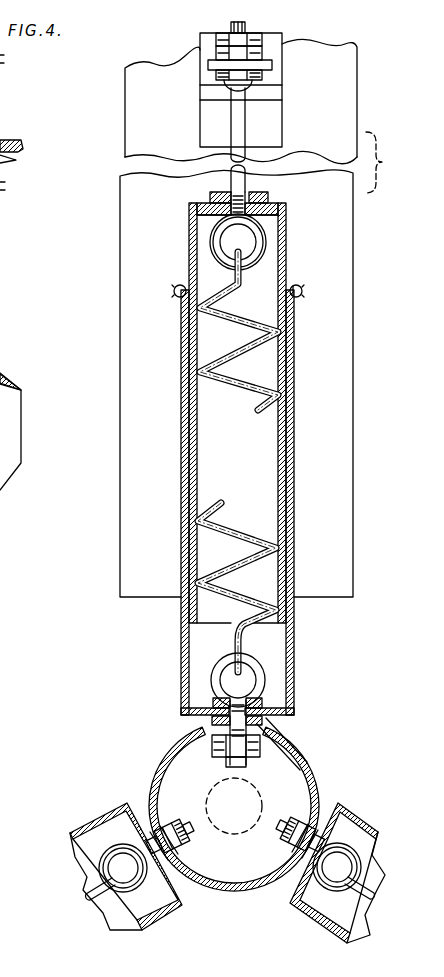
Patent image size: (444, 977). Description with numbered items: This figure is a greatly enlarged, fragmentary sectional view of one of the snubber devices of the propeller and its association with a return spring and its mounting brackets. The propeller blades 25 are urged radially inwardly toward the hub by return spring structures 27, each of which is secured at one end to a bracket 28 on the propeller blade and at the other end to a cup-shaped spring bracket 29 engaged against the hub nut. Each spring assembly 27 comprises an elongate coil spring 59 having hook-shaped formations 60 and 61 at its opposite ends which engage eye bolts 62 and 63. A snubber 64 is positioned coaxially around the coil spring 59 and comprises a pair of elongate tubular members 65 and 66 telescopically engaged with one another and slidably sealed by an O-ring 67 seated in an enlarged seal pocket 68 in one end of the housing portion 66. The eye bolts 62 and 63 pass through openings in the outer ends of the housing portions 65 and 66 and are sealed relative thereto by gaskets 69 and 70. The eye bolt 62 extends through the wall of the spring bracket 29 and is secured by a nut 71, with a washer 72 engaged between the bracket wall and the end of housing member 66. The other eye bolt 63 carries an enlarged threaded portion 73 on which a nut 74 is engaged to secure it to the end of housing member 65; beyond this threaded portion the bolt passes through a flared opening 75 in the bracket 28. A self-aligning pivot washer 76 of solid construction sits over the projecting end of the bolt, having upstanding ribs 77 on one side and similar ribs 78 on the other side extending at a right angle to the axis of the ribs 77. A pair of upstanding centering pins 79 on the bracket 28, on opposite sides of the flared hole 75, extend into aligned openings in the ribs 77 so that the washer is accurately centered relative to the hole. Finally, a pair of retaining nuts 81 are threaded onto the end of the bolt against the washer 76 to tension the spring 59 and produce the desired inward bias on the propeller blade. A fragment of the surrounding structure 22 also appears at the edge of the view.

The support structure 22 is at (11, 272).
The propeller blade 25 is at (120, 211).
The return spring structure 27 is at (158, 424).
The bracket 28 is at (198, 82).
The spring bracket 29 is at (170, 765).
The coil spring 59 is at (248, 530).
The hook-shaped formation 60 is at (214, 678).
The hook-shaped formation 61 is at (224, 245).
The eye bolt 62 is at (262, 672).
The eye bolt 63 is at (250, 180).
The snubber 64 is at (296, 403).
The tubular member 65 is at (290, 262).
The tubular member 66 is at (290, 350).
The O-ring 67 is at (300, 288).
The seal pocket 68 is at (303, 291).
The gasket 69 is at (262, 700).
The gasket 70 is at (208, 219).
The nut 71 is at (262, 752).
The washer 72 is at (264, 720).
The enlarged threaded portion 73 is at (255, 192).
The nut 74 is at (215, 201).
The flared opening 75 is at (232, 92).
The self-aligning pivot washer 76 is at (262, 76).
The upstanding ribs 77 is at (246, 90).
The upstanding ribs 78 is at (274, 62).
The centering pins 79 is at (230, 82).
The retaining nuts 81 is at (266, 52).